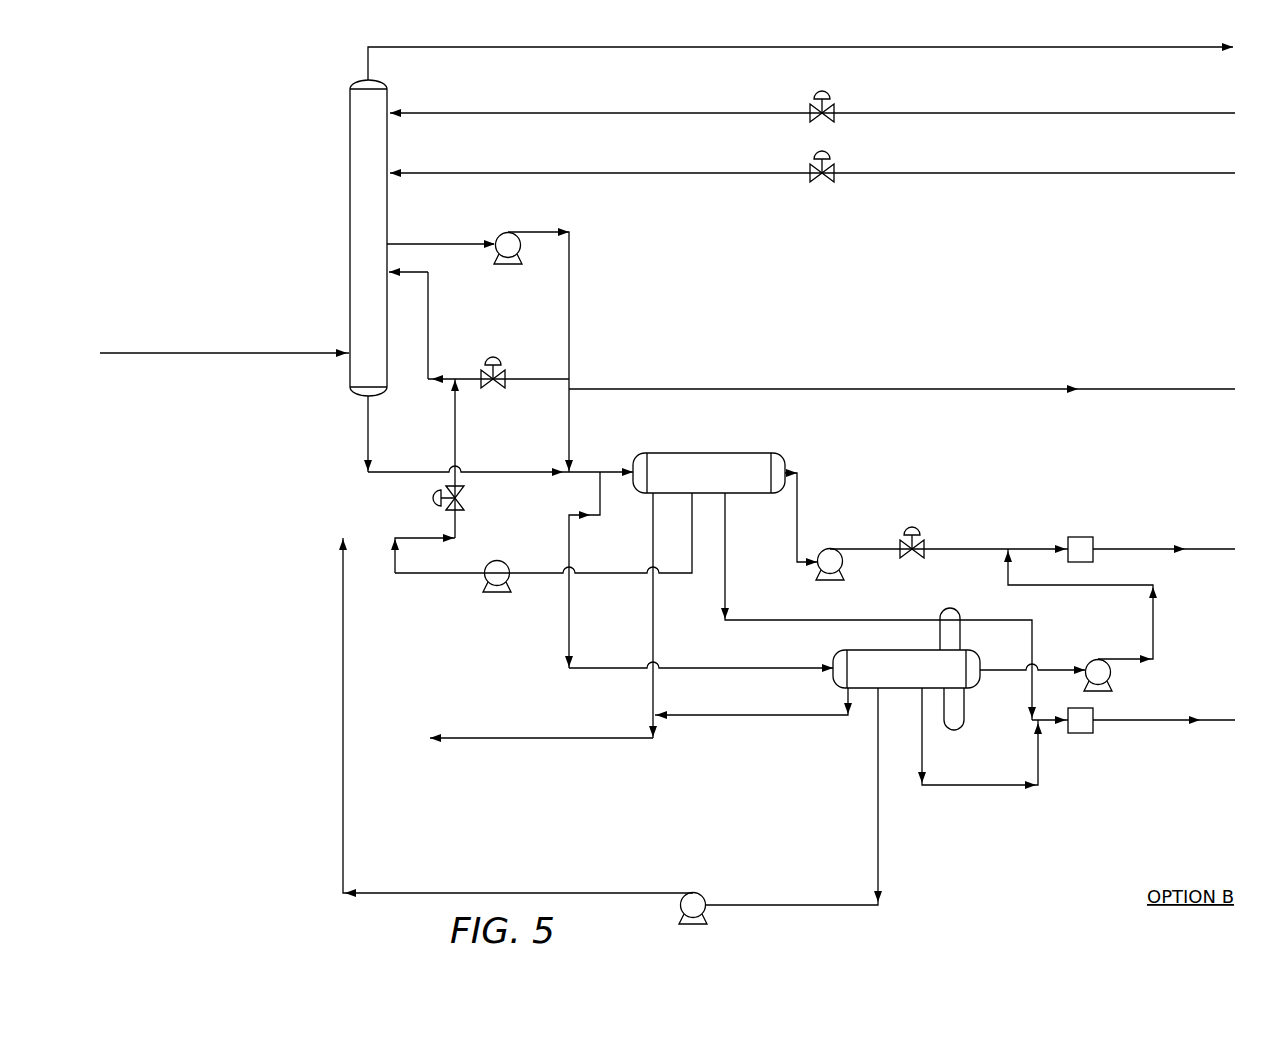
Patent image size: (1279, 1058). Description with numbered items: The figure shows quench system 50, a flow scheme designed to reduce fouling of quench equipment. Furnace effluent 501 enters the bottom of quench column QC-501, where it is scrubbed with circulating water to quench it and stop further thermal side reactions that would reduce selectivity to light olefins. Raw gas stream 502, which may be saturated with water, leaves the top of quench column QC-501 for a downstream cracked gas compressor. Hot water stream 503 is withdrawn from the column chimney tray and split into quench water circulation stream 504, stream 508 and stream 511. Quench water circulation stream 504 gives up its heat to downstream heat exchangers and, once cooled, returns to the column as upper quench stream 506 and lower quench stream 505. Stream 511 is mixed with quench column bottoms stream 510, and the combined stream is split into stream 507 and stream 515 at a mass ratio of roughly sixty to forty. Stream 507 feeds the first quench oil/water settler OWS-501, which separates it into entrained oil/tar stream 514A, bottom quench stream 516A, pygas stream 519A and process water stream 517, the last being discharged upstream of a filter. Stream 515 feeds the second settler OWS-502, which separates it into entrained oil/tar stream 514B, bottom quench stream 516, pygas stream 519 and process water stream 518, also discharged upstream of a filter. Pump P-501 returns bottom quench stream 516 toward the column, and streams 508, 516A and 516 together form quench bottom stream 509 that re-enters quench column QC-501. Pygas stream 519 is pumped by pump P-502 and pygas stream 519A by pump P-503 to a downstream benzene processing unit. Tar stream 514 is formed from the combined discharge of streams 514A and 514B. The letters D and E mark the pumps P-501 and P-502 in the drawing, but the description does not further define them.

The quench system 50 is at (208, 62).
The furnace effluent 501 is at (195, 353).
The raw gas stream 502 is at (636, 48).
The stream 503 is at (572, 262).
The quench water circulation stream 504 is at (905, 389).
The lower quench stream 505 is at (1063, 173).
The upper quench stream 506 is at (1063, 113).
The stream 507 is at (607, 470).
The stream 508 is at (537, 377).
The quench bottom stream 509 is at (429, 300).
The quench column bottoms stream 510 is at (368, 424).
The stream 511 is at (568, 415).
The tar stream 514 is at (490, 738).
The entrained oil/tar stream 514A is at (651, 606).
The entrained oil/tar stream 514B is at (758, 717).
The stream 515 is at (598, 497).
The bottom quench stream 516 is at (589, 892).
The bottom quench stream 516A is at (447, 580).
The process water stream 517 is at (878, 620).
The process water stream 518 is at (990, 787).
The pygas stream 519 is at (1154, 625).
The pygas stream 519A is at (946, 549).
The quench column QC-501 is at (349, 128).
The quench oil/water settler OWS-501 is at (709, 473).
The quench oil/water settler OWS-502 is at (906, 669).
The pump P-501 is at (688, 928).
The pump P-502 is at (1112, 678).
The pump P-503 is at (830, 547).
The pump D is at (702, 893).
The pump E is at (1098, 659).